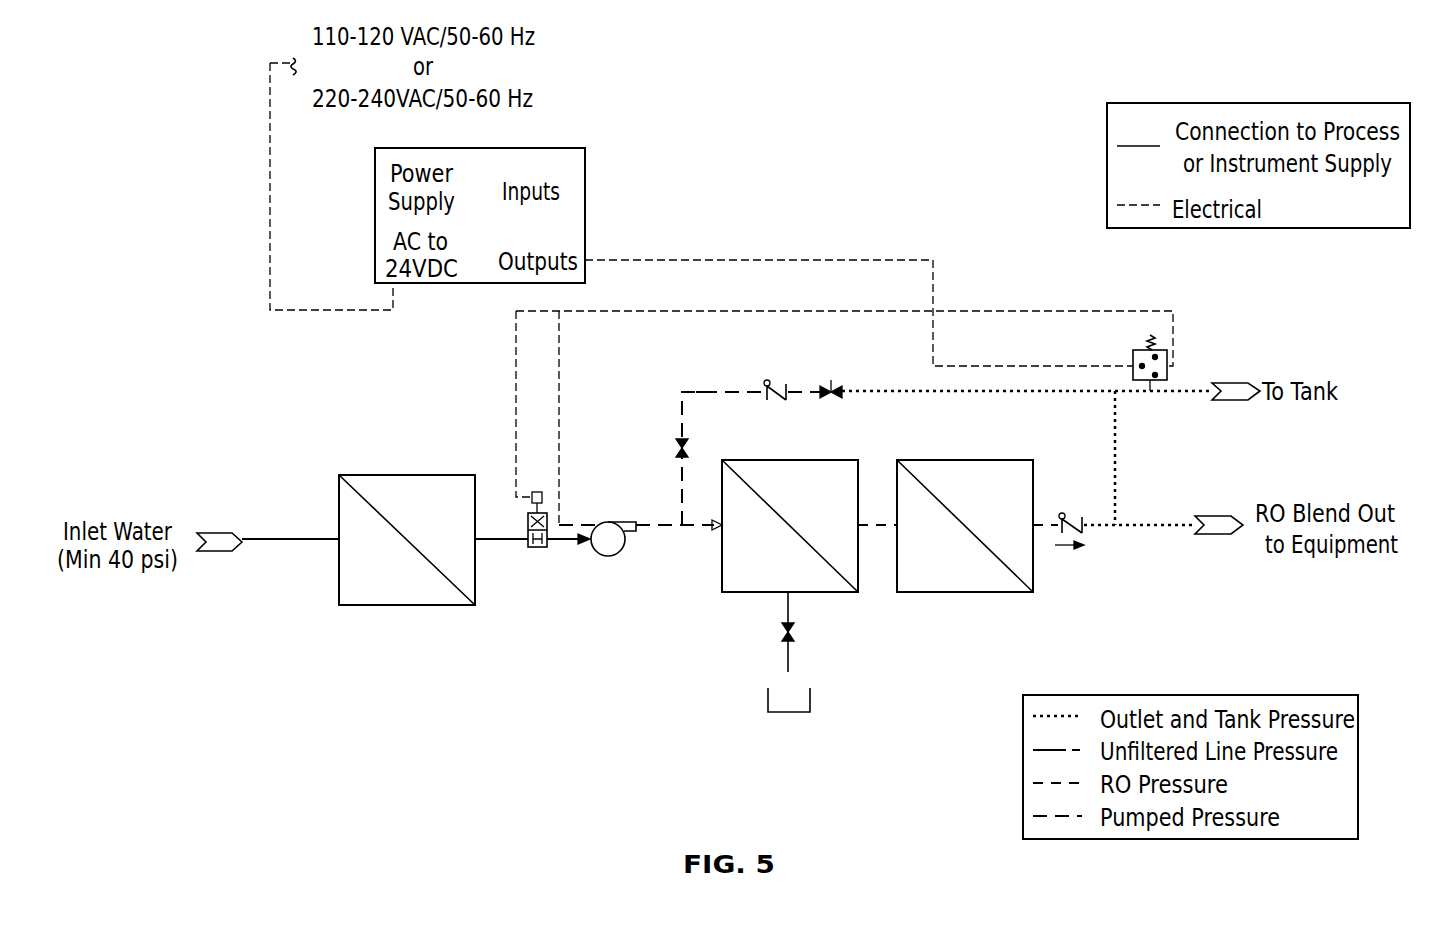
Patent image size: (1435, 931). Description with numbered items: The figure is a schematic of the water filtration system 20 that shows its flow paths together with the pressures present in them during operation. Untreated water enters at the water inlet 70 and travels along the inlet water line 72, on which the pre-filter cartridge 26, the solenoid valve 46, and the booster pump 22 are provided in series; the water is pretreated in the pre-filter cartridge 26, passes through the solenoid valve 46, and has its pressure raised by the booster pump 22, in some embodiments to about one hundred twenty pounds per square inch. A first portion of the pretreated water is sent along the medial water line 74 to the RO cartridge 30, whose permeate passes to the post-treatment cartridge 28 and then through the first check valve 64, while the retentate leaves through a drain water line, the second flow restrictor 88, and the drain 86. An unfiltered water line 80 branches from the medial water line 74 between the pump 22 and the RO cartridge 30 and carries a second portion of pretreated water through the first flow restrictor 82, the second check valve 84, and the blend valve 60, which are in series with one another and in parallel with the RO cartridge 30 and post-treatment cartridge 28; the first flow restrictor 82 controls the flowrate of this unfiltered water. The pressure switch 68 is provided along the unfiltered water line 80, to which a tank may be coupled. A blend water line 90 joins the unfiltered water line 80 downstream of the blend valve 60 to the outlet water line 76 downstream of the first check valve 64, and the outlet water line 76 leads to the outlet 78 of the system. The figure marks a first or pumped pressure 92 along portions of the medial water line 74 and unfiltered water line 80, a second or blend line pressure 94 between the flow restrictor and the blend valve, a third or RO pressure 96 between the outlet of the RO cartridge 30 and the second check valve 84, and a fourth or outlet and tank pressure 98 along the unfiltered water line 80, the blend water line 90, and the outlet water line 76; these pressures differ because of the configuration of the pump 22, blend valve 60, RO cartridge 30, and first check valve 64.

The water filtration system 20 is at (784, 151).
The booster pump 22 is at (612, 537).
The pre-filter cartridge 26 is at (400, 474).
The post-treatment cartridge 28 is at (975, 459).
The RO cartridge 30 is at (798, 459).
The solenoid valve 46 is at (528, 518).
The blend valve 60 is at (845, 391).
The first check valve 64 is at (1068, 541).
The pressure switch 68 is at (1167, 368).
The water inlet 70 is at (222, 550).
The inlet water line 72 is at (290, 544).
The medial water line 74 is at (872, 528).
The outlet water line 76 is at (1155, 529).
The outlet 78 is at (1215, 530).
The unfiltered water line 80 is at (690, 391).
The first flow restrictor 82 is at (679, 446).
The second check valve 84 is at (763, 385).
The drain 86 is at (765, 700).
The second flow restrictor 88 is at (795, 632).
The blend water line 90 is at (1117, 462).
The pumped pressure 92 is at (680, 486).
The blend line pressure 94 is at (713, 393).
The RO pressure 96 is at (862, 525).
The outlet and tank pressure 98 is at (970, 392).